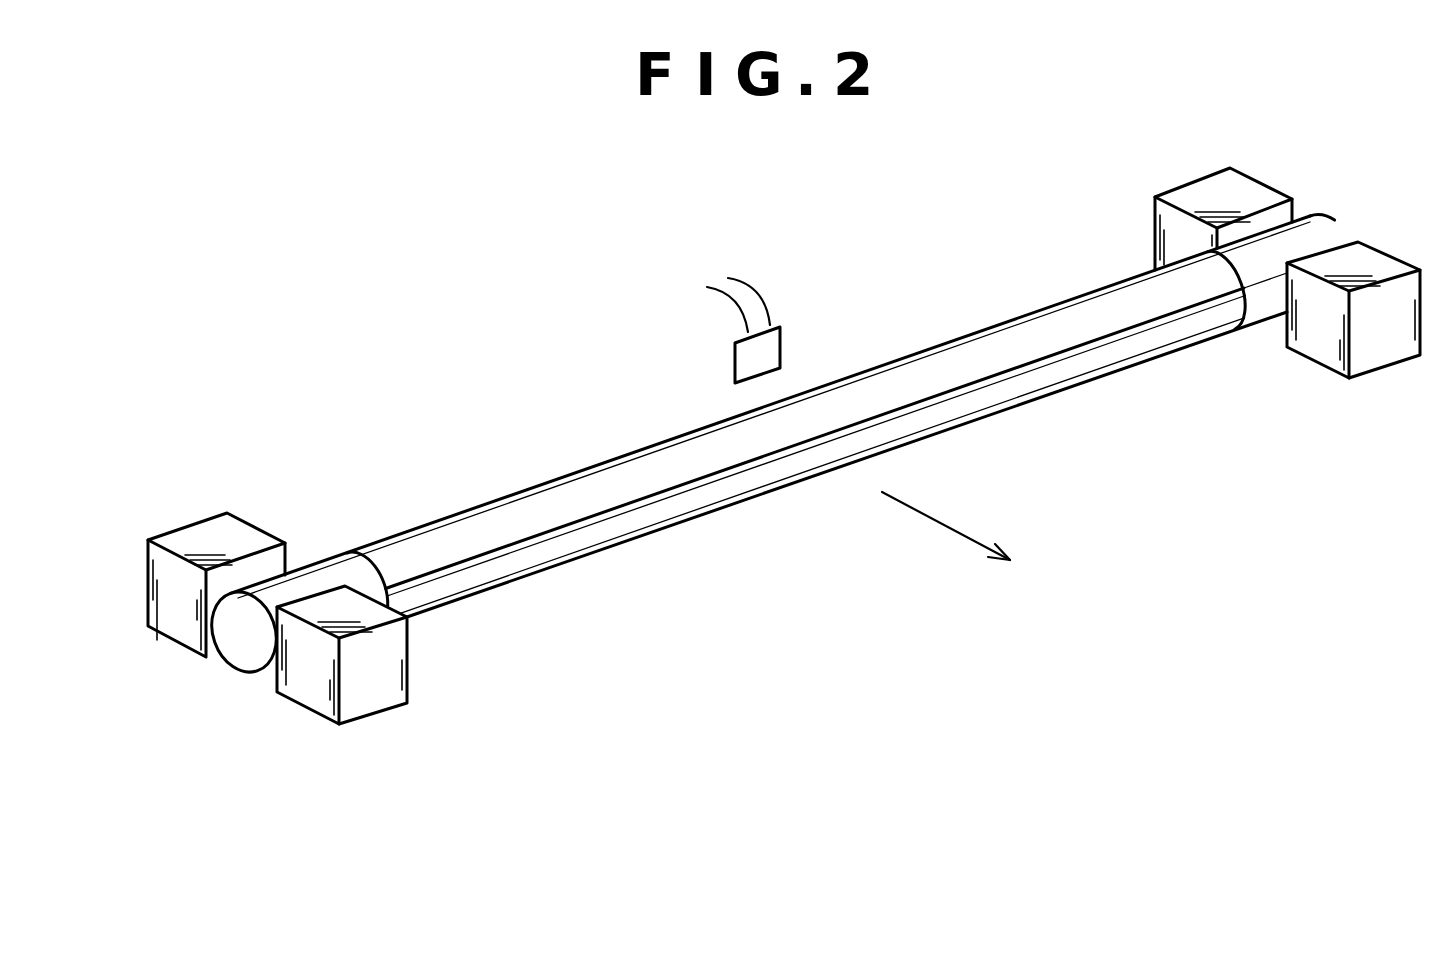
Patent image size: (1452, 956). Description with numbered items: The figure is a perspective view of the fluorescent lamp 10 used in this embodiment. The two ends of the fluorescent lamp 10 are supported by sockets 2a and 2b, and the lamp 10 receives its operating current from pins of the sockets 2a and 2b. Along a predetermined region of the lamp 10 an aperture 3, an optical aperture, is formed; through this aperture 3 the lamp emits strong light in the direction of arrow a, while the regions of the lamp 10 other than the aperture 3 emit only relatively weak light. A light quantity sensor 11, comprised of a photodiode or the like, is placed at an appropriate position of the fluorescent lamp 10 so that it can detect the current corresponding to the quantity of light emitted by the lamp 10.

The socket 2a is at (1243, 183).
The socket 2b is at (317, 673).
The aperture 3 is at (1120, 338).
The fluorescent lamp 10 is at (1030, 330).
The light quantity sensor 11 is at (747, 367).
The arrow a is at (946, 522).